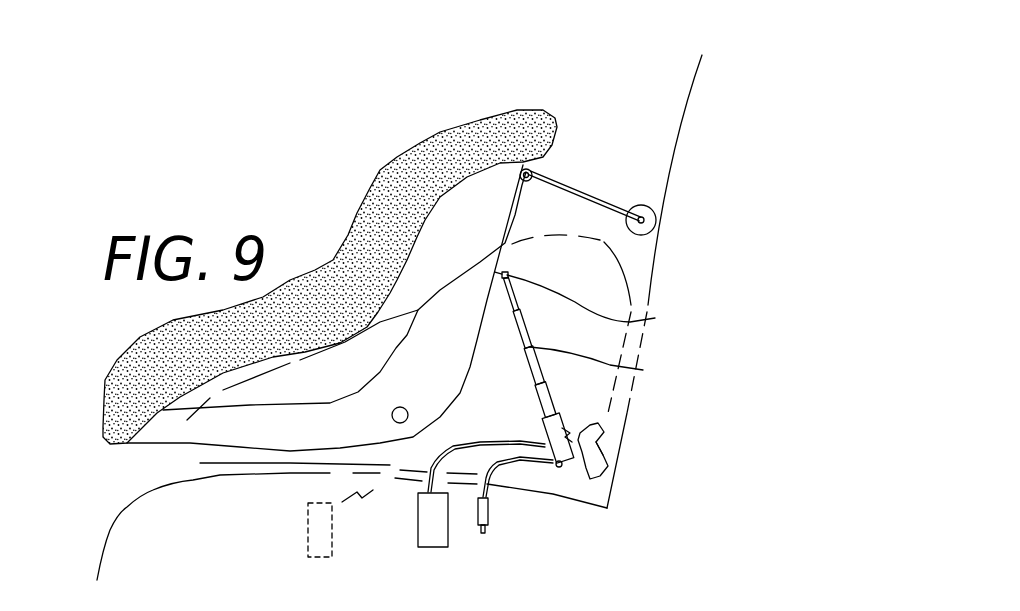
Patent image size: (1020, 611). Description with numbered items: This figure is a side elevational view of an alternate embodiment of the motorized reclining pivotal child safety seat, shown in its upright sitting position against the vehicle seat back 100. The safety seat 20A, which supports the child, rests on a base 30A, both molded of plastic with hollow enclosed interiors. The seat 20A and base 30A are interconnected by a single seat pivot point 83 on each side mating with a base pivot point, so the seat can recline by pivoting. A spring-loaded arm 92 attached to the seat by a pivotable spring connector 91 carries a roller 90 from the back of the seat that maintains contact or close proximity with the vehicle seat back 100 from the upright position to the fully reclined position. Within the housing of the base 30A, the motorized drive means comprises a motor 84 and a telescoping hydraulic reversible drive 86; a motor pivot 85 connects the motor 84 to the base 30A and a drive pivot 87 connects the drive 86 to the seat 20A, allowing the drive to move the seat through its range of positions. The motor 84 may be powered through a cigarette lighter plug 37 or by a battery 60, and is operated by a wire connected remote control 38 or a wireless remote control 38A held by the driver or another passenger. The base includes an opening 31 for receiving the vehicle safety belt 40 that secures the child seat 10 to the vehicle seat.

The vehicle seat 10 is at (560, 122).
The safety seat 20A is at (457, 127).
The base 30A is at (178, 438).
The opening 31 is at (520, 472).
The cigarette lighter plug 37 is at (490, 520).
The wire connected remote control 38 is at (420, 548).
The wireless remote control 38A is at (307, 555).
The vehicle safety belt 40 is at (607, 461).
The battery 60 is at (563, 427).
The seat pivot point 83 is at (422, 390).
The motor 84 is at (537, 423).
The motor pivot 85 is at (612, 484).
The telescoping hydraulic reversible drive 86 is at (599, 324).
The drive pivot 87 is at (603, 305).
The roller 90 is at (658, 233).
The pivotable spring connector 91 is at (531, 170).
The spring-loaded arm 92 is at (583, 193).
The vehicle seat back 100 is at (690, 80).